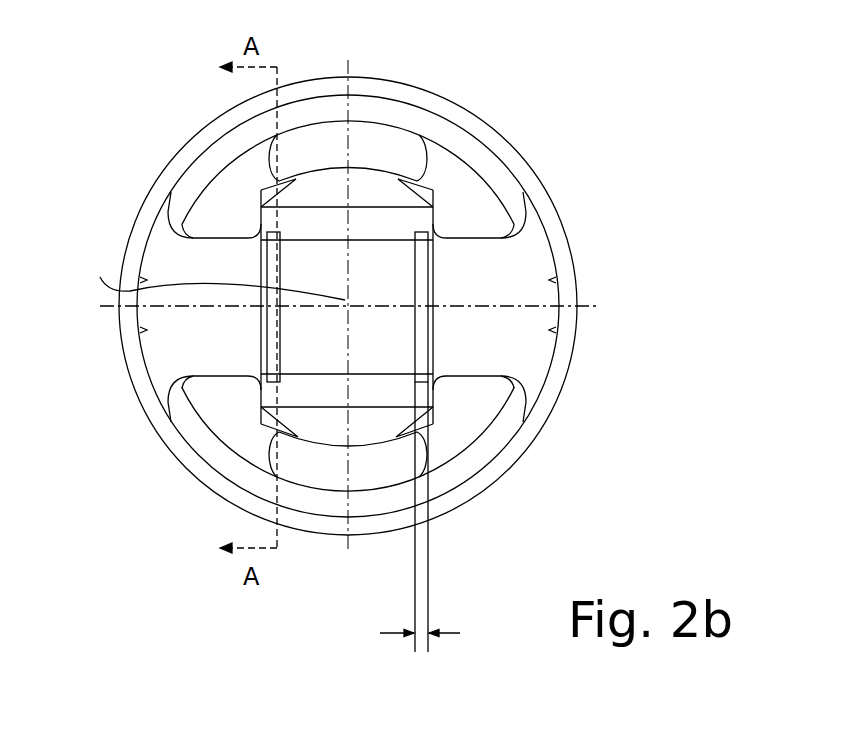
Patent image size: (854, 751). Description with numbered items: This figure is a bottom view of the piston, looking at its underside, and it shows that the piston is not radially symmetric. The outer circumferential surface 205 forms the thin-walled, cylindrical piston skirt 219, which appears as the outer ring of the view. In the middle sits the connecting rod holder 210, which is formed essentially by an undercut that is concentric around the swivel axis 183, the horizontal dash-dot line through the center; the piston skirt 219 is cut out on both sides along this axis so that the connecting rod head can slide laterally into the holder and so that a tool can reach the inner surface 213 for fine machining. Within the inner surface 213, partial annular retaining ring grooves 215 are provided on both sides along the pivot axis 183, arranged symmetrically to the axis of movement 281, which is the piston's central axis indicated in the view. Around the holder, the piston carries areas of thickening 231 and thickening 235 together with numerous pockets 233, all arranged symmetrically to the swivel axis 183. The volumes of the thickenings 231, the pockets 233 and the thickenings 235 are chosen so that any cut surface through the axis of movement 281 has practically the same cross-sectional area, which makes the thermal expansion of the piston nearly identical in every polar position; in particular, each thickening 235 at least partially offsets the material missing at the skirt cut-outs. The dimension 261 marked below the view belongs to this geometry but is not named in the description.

The swivel axis 183 is at (583, 306).
The circumferential surface 205 is at (446, 102).
The connecting rod holder 210 is at (430, 217).
The inner surface 213 is at (398, 335).
The annular retaining ring groove 215 is at (424, 353).
The piston skirt 219 is at (168, 157).
The thickening 231 is at (385, 130).
The pocket 233 is at (483, 203).
The thickening 235 is at (522, 257).
The gap width 261 is at (450, 633).
The axis of movement 281 is at (202, 272).